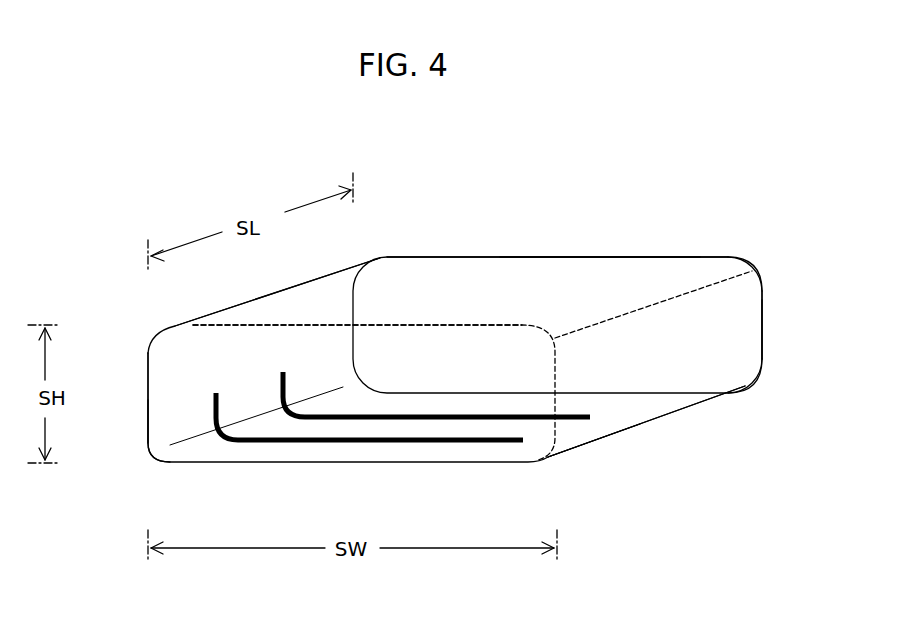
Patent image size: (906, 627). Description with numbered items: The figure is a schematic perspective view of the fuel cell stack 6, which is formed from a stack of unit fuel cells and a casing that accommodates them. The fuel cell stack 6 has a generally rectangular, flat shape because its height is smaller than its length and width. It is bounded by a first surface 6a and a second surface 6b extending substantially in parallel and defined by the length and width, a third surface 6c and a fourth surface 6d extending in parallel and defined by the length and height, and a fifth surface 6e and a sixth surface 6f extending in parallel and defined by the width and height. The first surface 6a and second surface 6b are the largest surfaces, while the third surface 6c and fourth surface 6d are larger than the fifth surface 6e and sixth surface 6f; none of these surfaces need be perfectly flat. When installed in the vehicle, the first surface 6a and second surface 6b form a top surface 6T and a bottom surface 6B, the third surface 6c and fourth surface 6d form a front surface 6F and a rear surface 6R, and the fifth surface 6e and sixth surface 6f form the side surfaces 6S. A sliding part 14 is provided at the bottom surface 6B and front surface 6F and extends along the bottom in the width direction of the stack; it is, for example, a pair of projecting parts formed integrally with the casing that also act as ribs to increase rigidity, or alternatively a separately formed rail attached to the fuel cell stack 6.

The fuel cell stack 6 is at (678, 202).
The first surface 6a is at (524, 290).
The top surface 6T is at (593, 276).
The fourth surface 6d is at (714, 300).
The rear surface 6R is at (745, 292).
The side surface 6S is at (745, 325).
The fifth surface 6e is at (743, 363).
The bottom surface 6B is at (643, 410).
The second surface 6b is at (602, 417).
The front surface 6F is at (165, 360).
The third surface 6c is at (177, 412).
The sixth surface 6f is at (237, 347).
The sliding part 14 is at (315, 417).